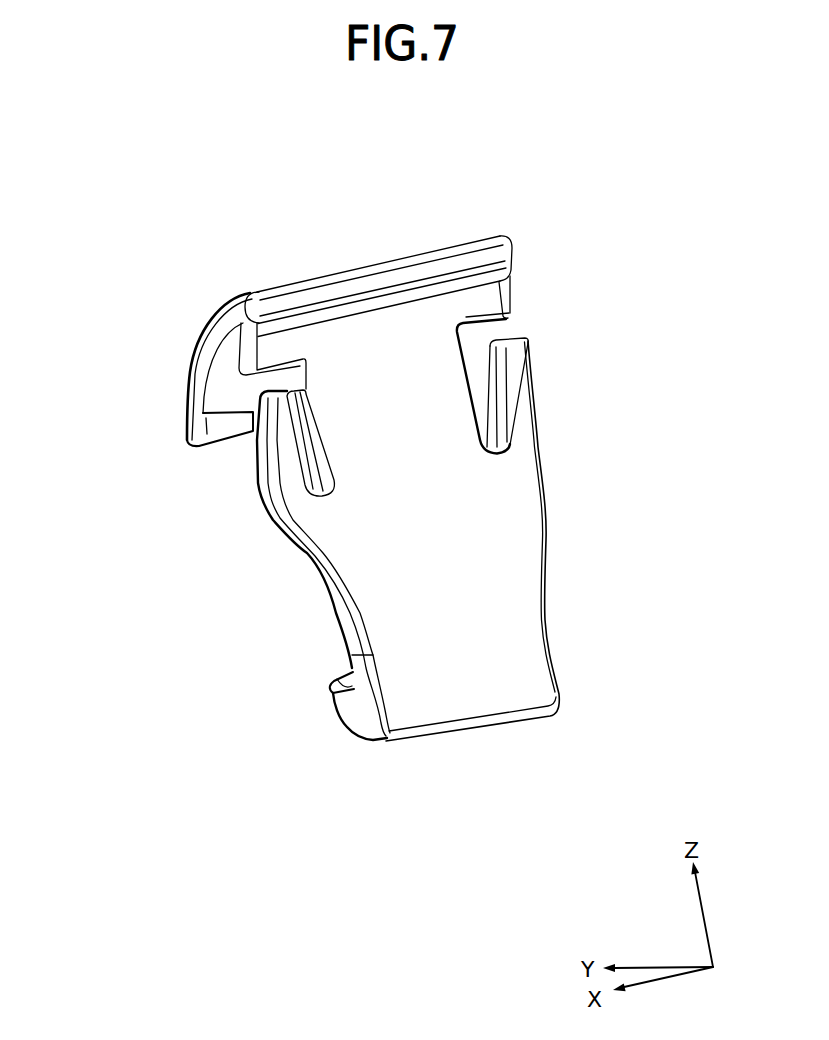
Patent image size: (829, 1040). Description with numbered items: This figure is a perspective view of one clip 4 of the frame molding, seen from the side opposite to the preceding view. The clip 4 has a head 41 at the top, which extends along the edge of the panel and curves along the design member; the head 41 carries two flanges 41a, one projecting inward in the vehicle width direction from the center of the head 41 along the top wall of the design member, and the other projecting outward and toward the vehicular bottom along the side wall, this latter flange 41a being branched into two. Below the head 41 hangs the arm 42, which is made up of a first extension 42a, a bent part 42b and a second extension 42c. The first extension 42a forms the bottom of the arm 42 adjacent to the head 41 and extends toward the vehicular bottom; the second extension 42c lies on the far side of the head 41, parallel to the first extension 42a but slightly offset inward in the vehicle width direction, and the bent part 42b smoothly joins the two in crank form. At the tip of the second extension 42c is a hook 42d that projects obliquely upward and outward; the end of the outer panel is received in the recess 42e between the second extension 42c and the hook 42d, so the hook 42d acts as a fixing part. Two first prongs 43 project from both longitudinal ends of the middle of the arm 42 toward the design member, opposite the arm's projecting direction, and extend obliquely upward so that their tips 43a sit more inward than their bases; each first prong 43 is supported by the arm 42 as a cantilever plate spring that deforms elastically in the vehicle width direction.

The clip 4 is at (258, 174).
The head 41 is at (467, 236).
The flange 41a is at (432, 273).
The arm 42 is at (481, 729).
The first extension 42a is at (398, 410).
The bent part 42b is at (450, 558).
The second extension 42c is at (473, 665).
The hook 42d is at (340, 697).
The recess 42e is at (343, 671).
The first prong 43 is at (544, 395).
The tip 43a is at (517, 334).